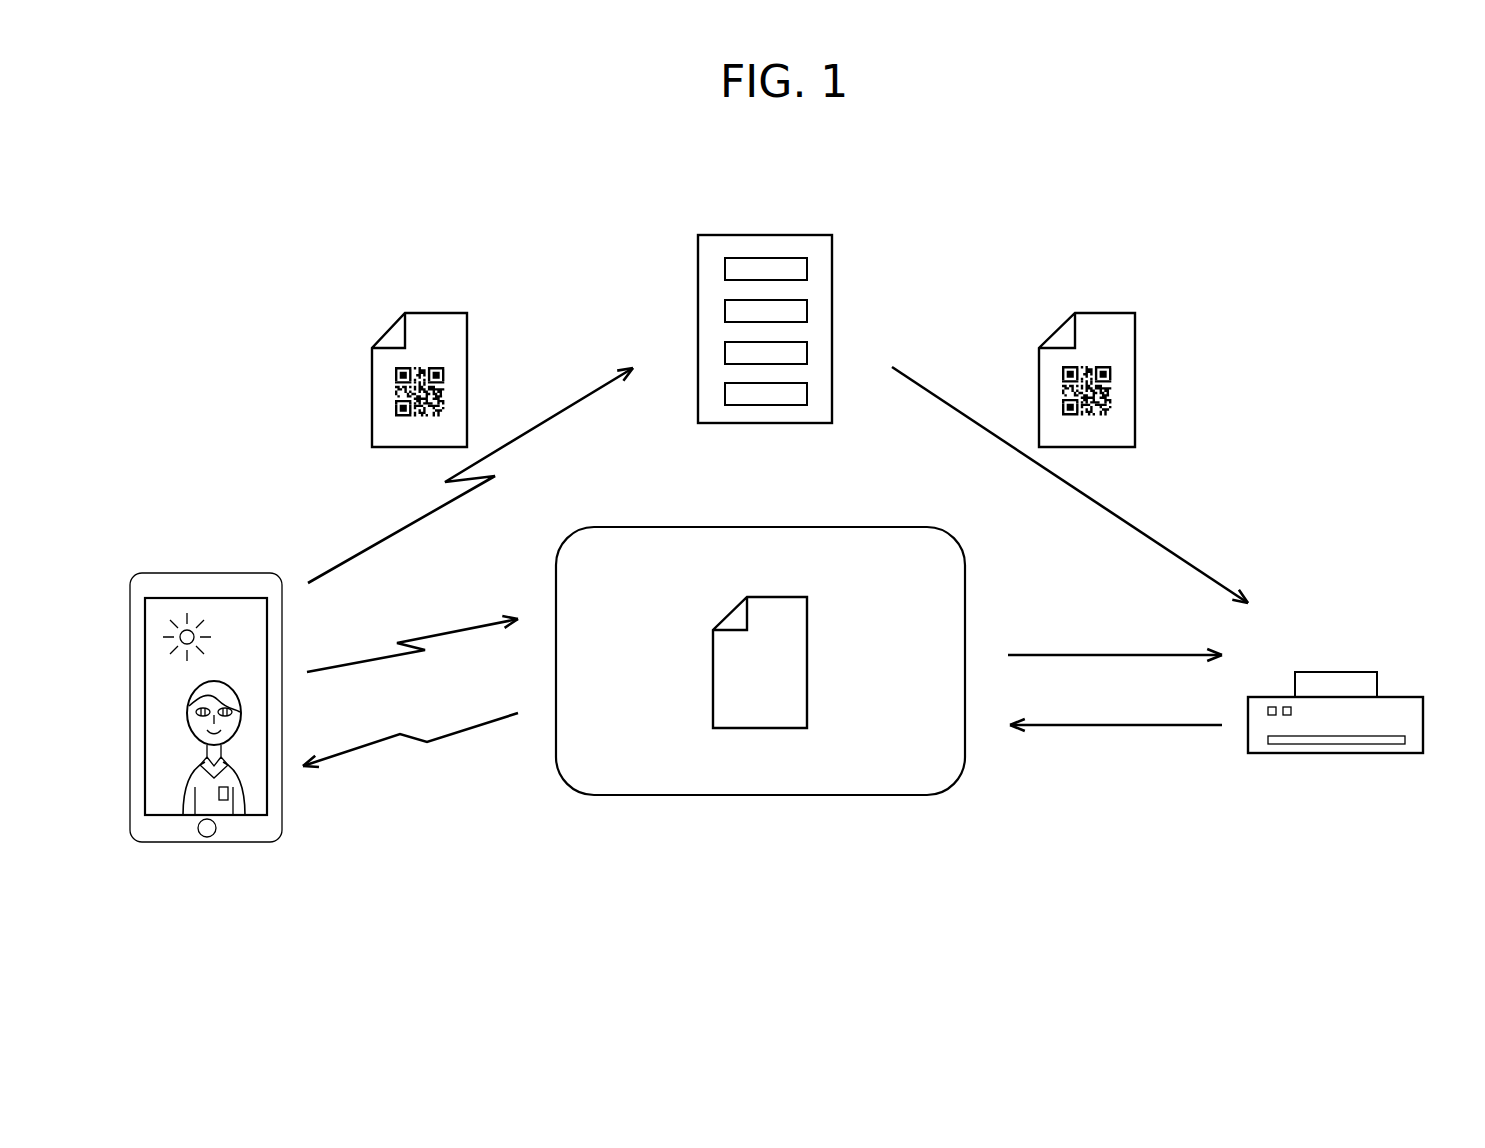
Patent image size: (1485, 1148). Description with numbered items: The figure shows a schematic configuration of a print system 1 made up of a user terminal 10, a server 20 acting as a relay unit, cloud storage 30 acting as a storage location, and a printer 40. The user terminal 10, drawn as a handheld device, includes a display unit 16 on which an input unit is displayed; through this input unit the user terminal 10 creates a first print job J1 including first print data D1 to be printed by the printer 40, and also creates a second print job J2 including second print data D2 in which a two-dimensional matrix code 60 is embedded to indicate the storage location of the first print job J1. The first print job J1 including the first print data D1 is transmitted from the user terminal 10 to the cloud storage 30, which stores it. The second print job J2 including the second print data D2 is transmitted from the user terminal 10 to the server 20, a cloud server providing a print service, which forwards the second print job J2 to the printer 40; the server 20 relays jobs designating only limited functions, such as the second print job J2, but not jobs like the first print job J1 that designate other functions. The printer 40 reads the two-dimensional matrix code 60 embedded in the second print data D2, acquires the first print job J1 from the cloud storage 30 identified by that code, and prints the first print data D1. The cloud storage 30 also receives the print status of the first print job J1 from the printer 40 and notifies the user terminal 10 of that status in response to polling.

The print system 1 is at (970, 188).
The user terminal 10 is at (236, 757).
The display unit 16 is at (258, 627).
The server 20 is at (843, 287).
The cloud storage 30 is at (812, 661).
The printer 40 is at (1401, 695).
The two-dimensional matrix code 60 is at (395, 393).
The first print data D1 is at (795, 661).
The second print data D2 is at (440, 320).
The first print job J1 is at (707, 669).
The second print job J2 is at (471, 350).